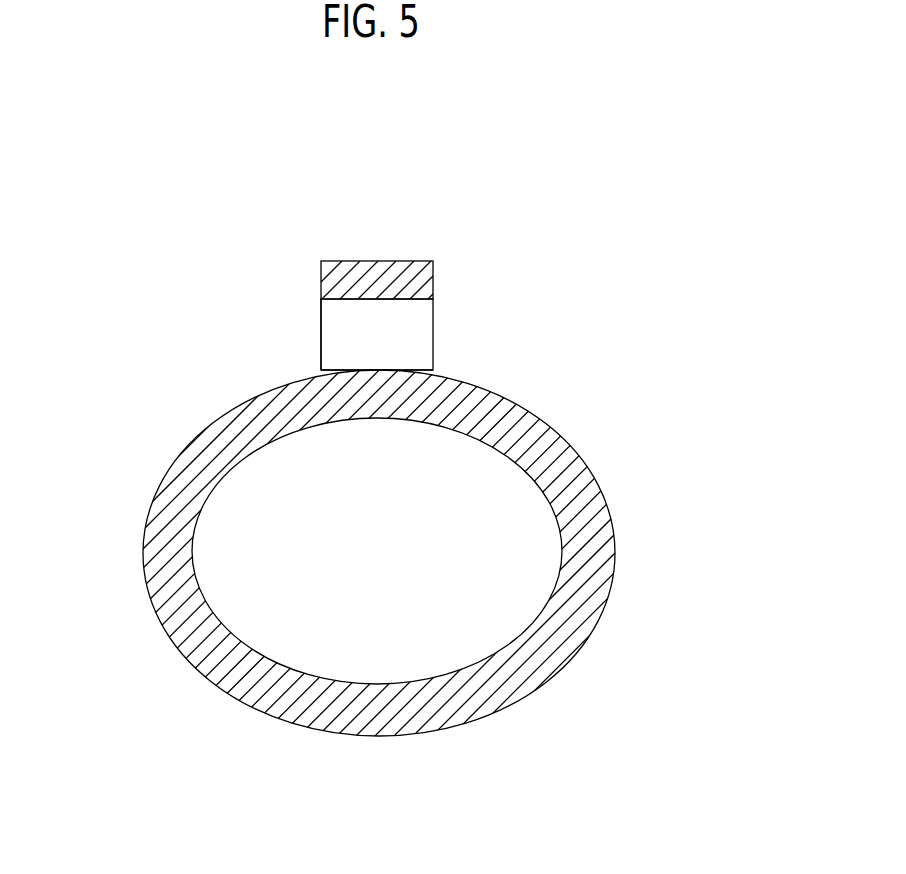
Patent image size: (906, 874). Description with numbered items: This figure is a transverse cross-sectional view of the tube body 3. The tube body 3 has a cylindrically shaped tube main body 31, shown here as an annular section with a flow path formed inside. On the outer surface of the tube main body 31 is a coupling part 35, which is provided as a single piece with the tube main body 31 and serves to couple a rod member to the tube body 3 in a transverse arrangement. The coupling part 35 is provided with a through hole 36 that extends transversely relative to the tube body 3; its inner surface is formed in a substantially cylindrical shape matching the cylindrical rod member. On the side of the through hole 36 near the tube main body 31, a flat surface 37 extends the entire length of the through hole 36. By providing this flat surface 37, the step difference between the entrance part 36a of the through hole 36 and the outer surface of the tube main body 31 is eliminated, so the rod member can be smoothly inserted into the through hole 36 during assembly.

The tube body 3 is at (650, 274).
The tube main body 31 is at (593, 497).
The coupling part 35 is at (350, 277).
The through hole 36 is at (303, 318).
The entrance part 36a is at (320, 370).
The flat surface 37 is at (392, 369).